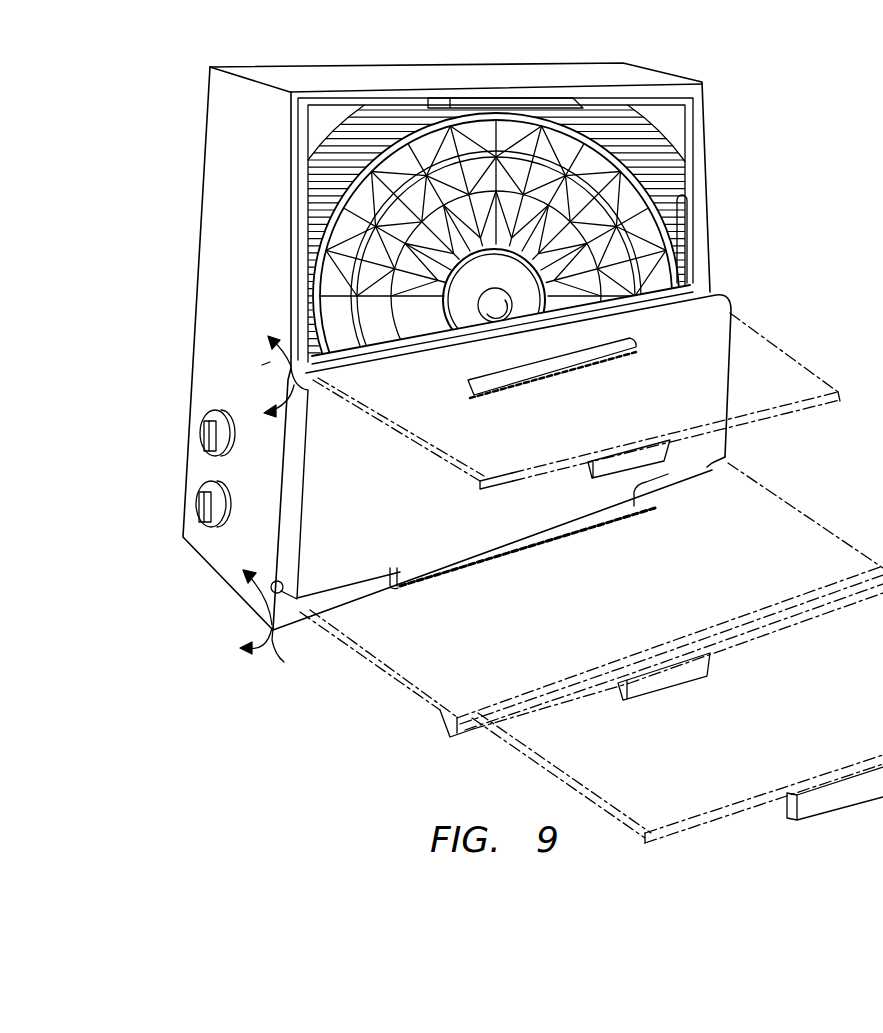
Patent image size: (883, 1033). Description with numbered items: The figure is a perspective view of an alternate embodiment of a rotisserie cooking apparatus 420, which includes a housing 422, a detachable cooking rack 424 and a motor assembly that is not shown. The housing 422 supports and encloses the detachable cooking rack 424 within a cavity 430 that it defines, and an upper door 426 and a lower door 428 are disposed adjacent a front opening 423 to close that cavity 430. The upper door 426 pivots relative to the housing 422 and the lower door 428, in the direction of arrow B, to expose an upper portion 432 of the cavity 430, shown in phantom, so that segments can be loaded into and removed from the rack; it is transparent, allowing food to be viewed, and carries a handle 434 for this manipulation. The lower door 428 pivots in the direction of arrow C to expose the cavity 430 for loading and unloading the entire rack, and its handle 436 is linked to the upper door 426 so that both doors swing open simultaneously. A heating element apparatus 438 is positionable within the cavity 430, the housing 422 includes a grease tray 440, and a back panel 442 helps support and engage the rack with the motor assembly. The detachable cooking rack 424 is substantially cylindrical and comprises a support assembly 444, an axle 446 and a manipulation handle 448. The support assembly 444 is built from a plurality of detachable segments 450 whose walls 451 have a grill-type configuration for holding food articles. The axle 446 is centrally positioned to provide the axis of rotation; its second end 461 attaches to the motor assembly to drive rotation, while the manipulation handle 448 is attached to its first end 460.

The rotisserie cooking apparatus 420 is at (117, 356).
The housing 422 is at (199, 165).
The front opening 423 is at (693, 117).
The detachable cooking rack 424 is at (654, 162).
The upper door 426 is at (317, 113).
The lower door 428 is at (317, 488).
The cavity 430 is at (603, 112).
The upper portion 432 is at (680, 183).
The handle 434 is at (458, 98).
The handle 436 is at (630, 340).
The heating element apparatus 438 is at (680, 226).
The grease tray 440 is at (443, 568).
The back panel 442 is at (340, 273).
The support assembly 444 is at (427, 120).
The axle 446 is at (380, 288).
The manipulation handle 448 is at (462, 332).
The detachable segment 450 is at (548, 128).
The walls 451 is at (607, 137).
The first end 460 is at (484, 314).
The second end 461 is at (333, 237).